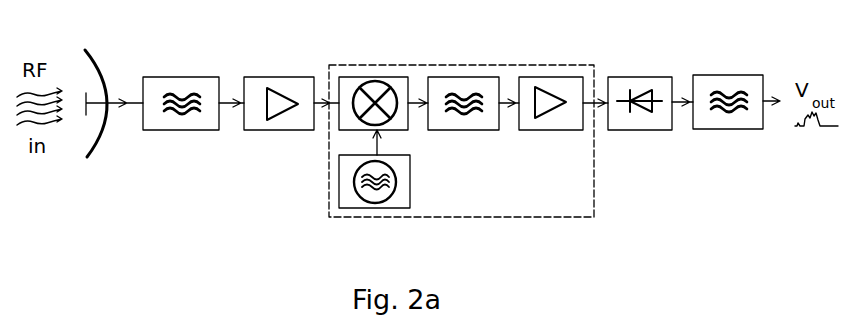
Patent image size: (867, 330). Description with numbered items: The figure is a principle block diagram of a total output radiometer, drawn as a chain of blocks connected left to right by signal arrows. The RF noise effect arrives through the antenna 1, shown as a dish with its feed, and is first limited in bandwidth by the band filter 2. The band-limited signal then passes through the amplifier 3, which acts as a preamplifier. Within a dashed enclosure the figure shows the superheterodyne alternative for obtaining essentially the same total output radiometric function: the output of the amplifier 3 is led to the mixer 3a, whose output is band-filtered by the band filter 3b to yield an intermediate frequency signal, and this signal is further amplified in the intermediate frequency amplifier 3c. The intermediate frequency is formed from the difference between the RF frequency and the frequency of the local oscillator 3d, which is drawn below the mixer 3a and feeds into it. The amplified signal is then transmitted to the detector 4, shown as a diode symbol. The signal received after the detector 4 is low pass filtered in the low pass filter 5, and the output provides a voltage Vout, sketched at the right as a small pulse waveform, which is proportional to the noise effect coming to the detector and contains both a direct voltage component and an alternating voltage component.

The antenna 1 is at (106, 136).
The band filter 2 is at (195, 83).
The amplifier 3 is at (303, 83).
The mixer 3a is at (397, 82).
The band filter 3b is at (482, 82).
The intermediate frequency amplifier 3c is at (565, 80).
The local oscillator 3d is at (345, 166).
The detector 4 is at (635, 80).
The low pass filter 5 is at (735, 80).